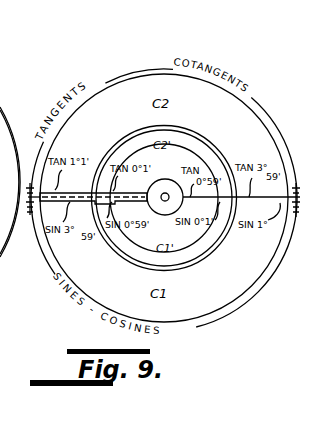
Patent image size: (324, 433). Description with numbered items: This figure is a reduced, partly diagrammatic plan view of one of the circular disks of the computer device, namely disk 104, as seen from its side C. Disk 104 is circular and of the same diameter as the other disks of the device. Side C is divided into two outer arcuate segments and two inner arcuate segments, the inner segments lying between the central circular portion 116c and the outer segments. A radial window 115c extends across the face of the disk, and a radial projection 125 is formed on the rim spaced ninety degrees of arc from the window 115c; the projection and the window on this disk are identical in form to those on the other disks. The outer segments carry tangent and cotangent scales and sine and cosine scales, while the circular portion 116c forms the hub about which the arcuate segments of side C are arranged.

The disk 104 is at (206, 312).
The radial projection 125 is at (171, 72).
The circular portion 116c is at (172, 181).
The radial window 115c is at (46, 216).
The side C of disk C is at (70, 258).